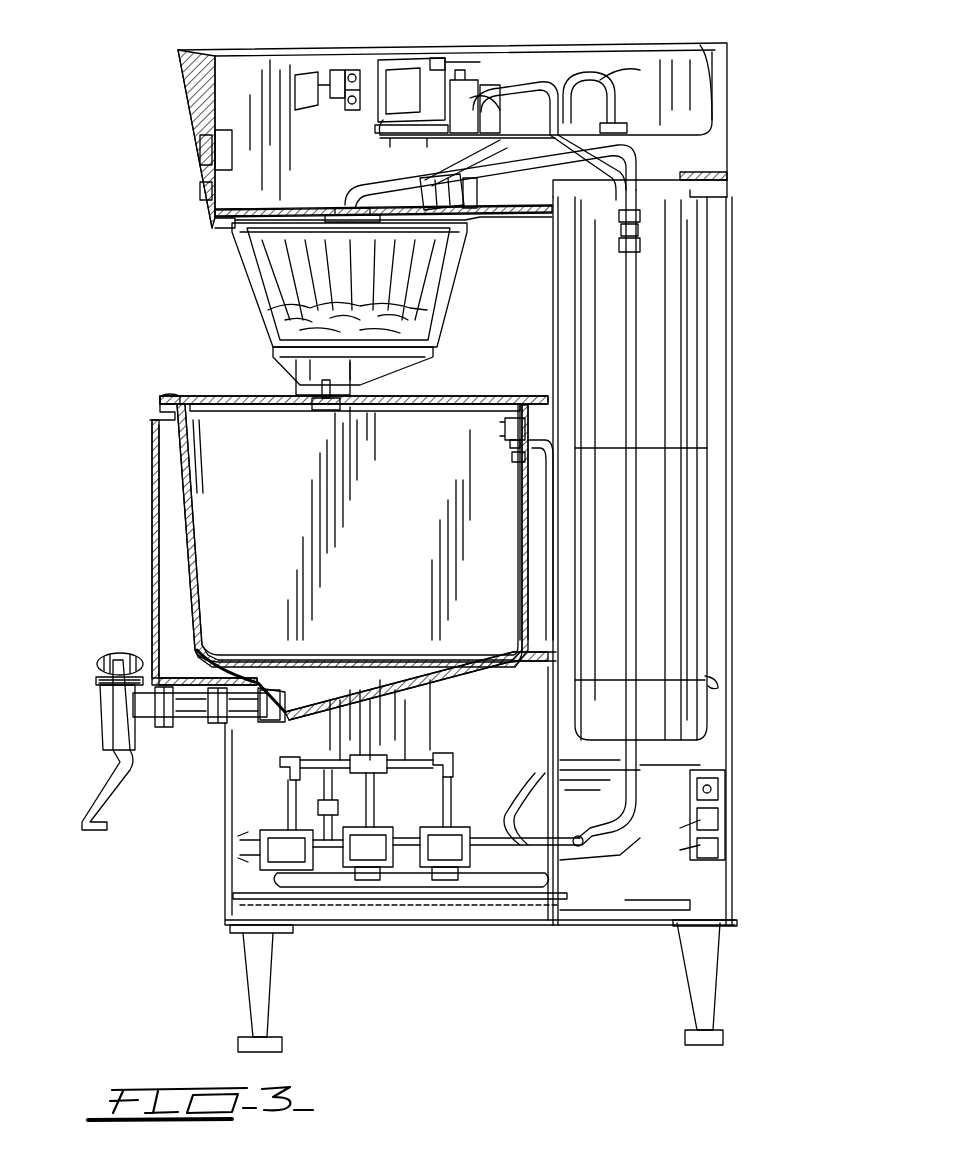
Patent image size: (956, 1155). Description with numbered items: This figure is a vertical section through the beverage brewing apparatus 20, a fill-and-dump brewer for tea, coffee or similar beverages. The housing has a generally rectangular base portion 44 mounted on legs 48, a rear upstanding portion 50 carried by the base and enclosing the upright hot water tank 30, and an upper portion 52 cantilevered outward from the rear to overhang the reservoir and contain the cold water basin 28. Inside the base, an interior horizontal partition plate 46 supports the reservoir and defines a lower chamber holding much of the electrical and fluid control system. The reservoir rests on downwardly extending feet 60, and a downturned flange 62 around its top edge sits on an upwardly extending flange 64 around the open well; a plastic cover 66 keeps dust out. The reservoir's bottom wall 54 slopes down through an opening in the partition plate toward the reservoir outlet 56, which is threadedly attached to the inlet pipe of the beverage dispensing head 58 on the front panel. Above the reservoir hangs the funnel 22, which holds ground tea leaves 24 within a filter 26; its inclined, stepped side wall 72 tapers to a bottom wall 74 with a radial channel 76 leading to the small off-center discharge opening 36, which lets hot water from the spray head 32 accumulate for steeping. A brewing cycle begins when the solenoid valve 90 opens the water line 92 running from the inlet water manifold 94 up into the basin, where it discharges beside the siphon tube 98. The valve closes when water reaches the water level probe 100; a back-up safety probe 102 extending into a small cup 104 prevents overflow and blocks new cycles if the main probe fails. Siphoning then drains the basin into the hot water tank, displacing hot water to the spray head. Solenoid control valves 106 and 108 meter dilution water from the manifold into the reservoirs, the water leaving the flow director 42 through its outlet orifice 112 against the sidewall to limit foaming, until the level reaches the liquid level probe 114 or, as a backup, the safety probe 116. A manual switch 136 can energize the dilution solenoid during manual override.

The beverage brewing apparatus 20 is at (172, 106).
The funnel 22 is at (341, 305).
The ground tea leaves 24 is at (280, 326).
The filter 26 is at (255, 296).
The cold water basin 28 is at (690, 80).
The hot water tank 30 is at (685, 308).
The spray head 32 is at (350, 217).
The discharge opening 36 is at (306, 400).
The flow director 42 is at (505, 420).
The base portion 44 is at (150, 535).
The partition plate 46 is at (505, 675).
The legs 48 is at (265, 978).
The rear upstanding portion 50 is at (735, 402).
The upper portion 52 is at (285, 50).
The bottom wall 54 is at (400, 672).
The reservoir outlet 56 is at (315, 702).
The beverage dispensing head 58 is at (110, 730).
The feet 60 is at (168, 660).
The downturned flange 62 is at (176, 400).
The upwardly extending flange 64 is at (170, 430).
The cover 66 is at (222, 396).
The side wall 72 is at (450, 296).
The bottom wall 74 is at (395, 360).
The radial channel 76 is at (326, 402).
The solenoid valve 90 is at (265, 848).
The water line 92 is at (548, 80).
The inlet water manifold 94 is at (450, 762).
The siphon tube 98 is at (600, 80).
The water level probe 100 is at (480, 95).
The safety probe 102 is at (420, 68).
The cup 104 is at (405, 95).
The solenoid control valve 106 is at (450, 870).
The solenoid control valve 108 is at (375, 870).
The outlet orifice 112 is at (508, 440).
The liquid level probe 114 is at (500, 476).
The safety probe 116 is at (510, 456).
The manual switch 136 is at (250, 900).